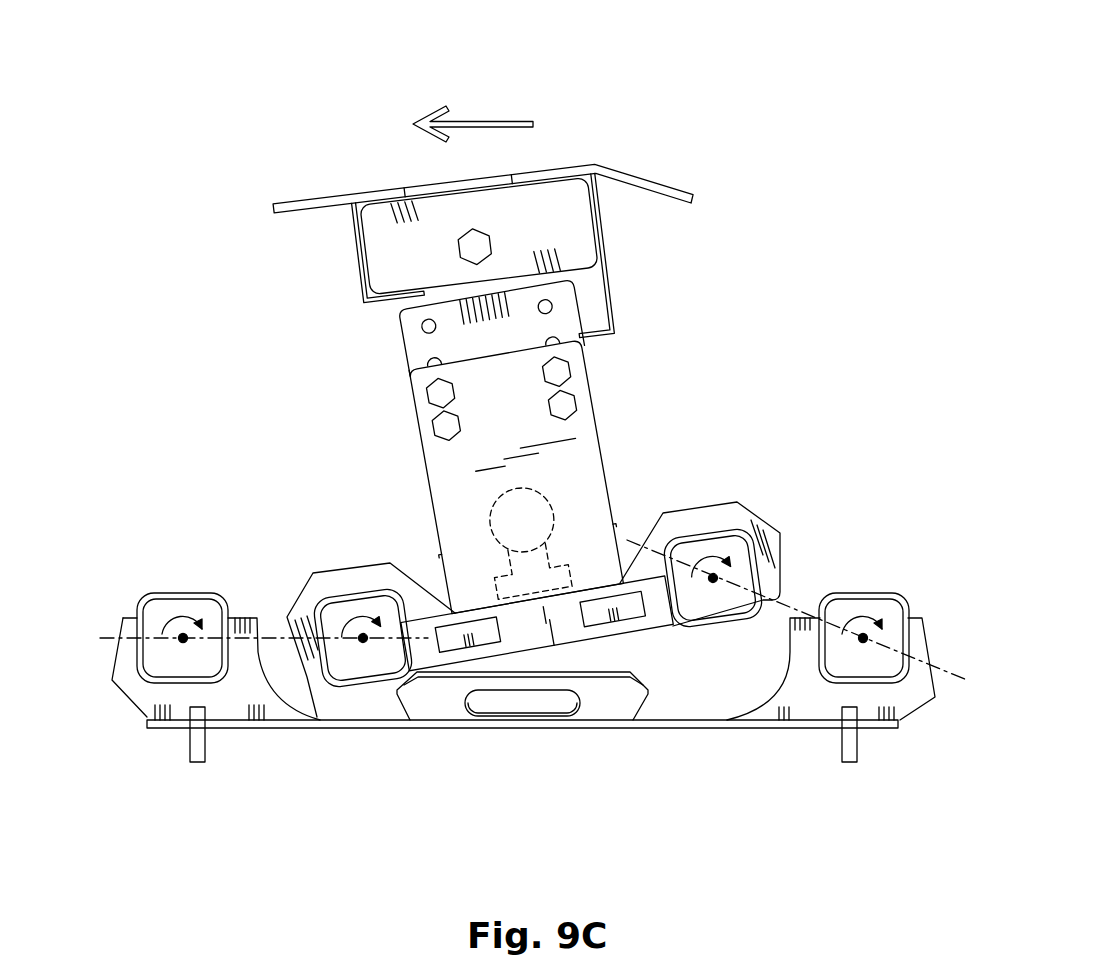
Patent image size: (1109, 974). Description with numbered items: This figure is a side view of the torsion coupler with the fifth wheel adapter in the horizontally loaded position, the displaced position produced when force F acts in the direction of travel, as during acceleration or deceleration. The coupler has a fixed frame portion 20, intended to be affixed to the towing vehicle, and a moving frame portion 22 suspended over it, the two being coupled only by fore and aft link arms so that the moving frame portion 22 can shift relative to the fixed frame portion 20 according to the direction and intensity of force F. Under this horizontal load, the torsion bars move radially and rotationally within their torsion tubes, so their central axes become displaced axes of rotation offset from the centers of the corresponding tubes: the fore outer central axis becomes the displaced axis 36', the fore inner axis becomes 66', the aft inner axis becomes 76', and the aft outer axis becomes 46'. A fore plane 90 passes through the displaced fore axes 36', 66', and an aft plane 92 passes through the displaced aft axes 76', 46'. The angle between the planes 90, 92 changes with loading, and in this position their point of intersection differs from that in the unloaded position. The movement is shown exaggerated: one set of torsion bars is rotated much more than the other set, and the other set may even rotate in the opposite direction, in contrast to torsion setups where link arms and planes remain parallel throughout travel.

The force F is at (483, 121).
The fixed frame portion 20 is at (401, 757).
The moving frame portion 22 is at (307, 529).
The displaced fore outer central axis 36' is at (182, 594).
The displaced aft outer central axis 46' is at (864, 599).
The displaced fore inner central axis 66' is at (363, 585).
The displaced aft inner central axis 76' is at (713, 538).
The fore plane 90 is at (99, 634).
The aft plane 92 is at (957, 684).